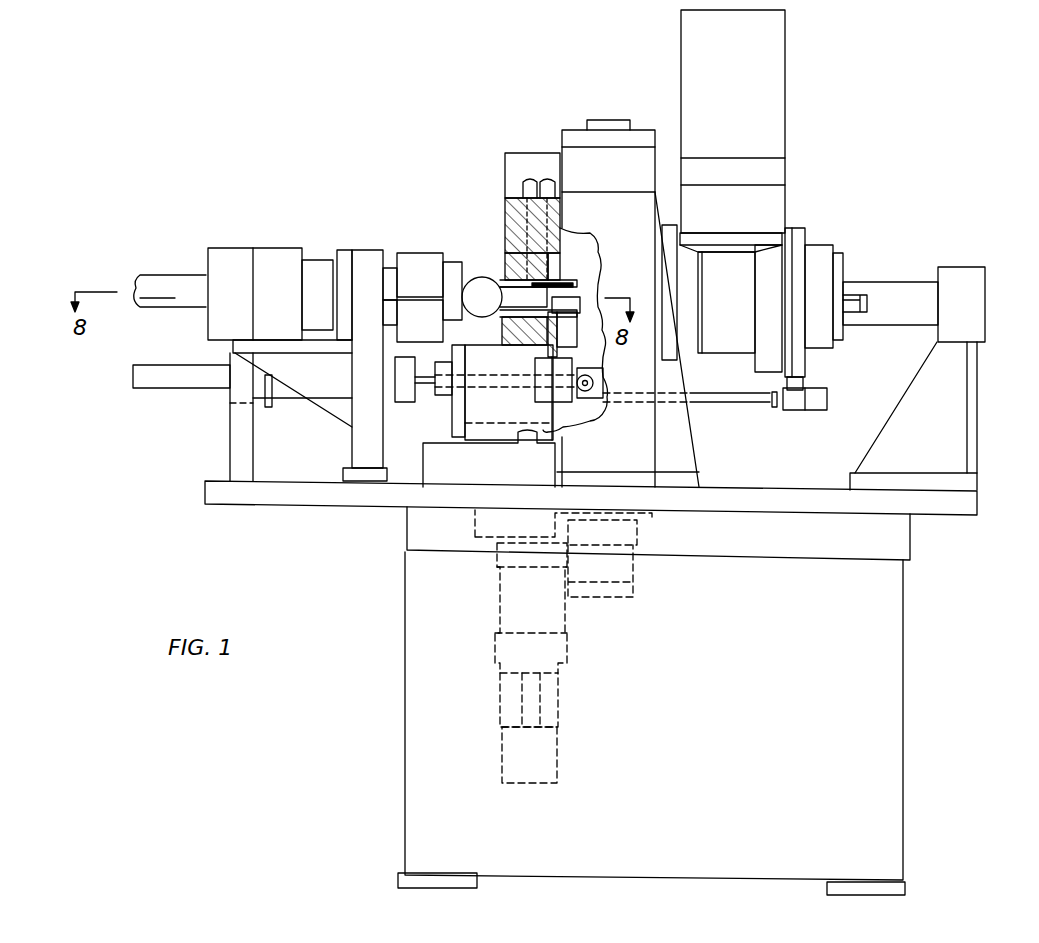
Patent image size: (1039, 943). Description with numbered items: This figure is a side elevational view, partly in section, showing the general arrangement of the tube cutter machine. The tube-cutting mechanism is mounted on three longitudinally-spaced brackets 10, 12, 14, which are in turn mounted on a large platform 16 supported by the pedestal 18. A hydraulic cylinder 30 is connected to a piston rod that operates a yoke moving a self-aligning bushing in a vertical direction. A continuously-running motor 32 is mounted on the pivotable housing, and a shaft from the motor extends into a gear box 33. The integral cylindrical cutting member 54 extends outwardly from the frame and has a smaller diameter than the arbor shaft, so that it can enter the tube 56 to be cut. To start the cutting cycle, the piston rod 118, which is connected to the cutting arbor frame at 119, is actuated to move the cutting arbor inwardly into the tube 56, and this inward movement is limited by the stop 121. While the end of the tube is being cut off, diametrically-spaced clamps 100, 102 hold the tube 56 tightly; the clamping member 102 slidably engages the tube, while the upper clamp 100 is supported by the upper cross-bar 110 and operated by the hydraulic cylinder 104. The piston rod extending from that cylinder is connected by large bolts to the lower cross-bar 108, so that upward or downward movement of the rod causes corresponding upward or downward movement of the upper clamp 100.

The bracket 10 is at (360, 425).
The bracket 12 is at (667, 452).
The bracket 14 is at (893, 438).
The platform 16 is at (928, 503).
The pedestal 18 is at (875, 735).
The hydraulic cylinder 30 is at (647, 535).
The motor 32 is at (760, 118).
The gear box 33 is at (683, 343).
The cutting member 54 is at (560, 300).
The tube 56 is at (570, 293).
The clamp 100 is at (513, 263).
The clamping member 102 is at (518, 338).
The hydraulic cylinder 104 is at (500, 606).
The lower cross-bar 108 is at (537, 745).
The upper cross-bar 110 is at (513, 230).
The piston rod 118 is at (428, 385).
The connection to cutting arbor frame 119 is at (595, 383).
The stop 121 is at (538, 395).